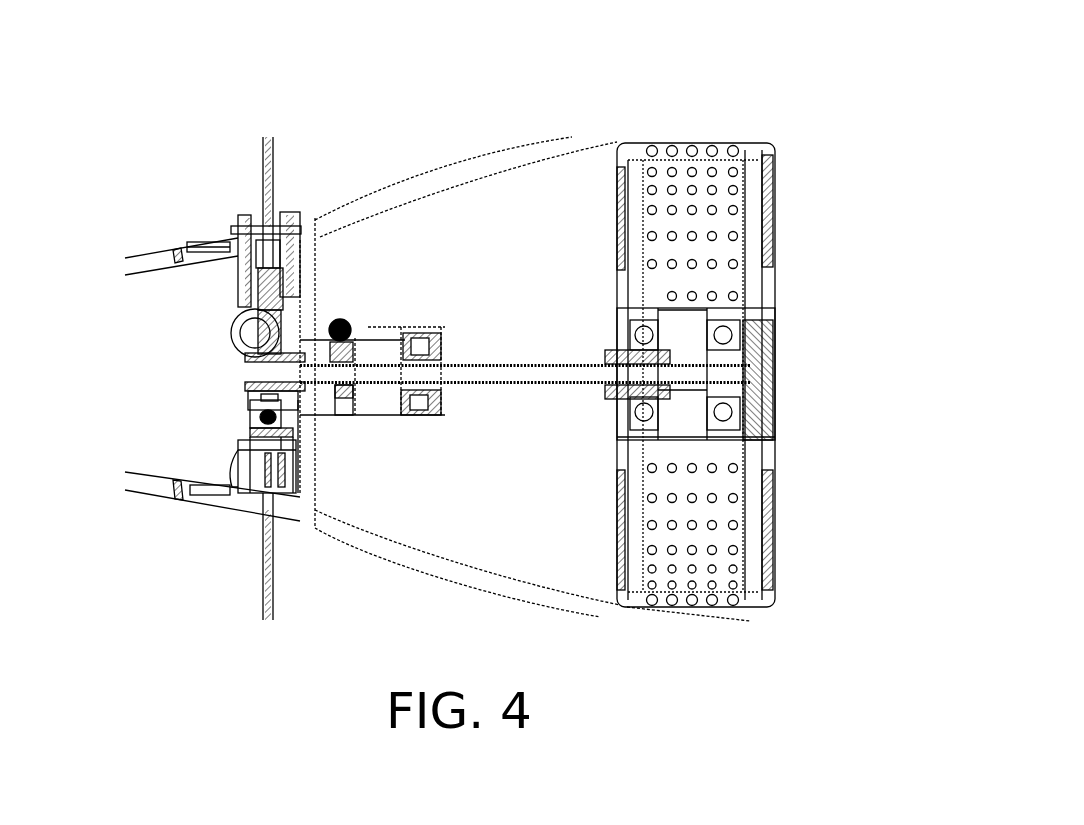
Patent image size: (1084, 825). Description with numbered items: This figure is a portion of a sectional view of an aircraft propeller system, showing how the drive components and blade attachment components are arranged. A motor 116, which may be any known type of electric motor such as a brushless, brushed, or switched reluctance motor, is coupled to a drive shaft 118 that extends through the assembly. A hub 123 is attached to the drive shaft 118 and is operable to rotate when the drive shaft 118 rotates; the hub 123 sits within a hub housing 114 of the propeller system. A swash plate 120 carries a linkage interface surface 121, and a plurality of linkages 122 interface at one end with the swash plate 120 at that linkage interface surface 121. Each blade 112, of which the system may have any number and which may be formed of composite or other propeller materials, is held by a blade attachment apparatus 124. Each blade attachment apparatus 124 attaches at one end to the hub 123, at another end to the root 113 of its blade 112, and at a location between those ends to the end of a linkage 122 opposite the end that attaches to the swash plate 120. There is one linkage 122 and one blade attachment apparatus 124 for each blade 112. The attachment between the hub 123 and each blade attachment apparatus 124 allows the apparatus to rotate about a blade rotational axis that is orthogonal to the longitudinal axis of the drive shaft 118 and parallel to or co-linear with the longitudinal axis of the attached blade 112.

The blade 112 is at (268, 181).
The root 113 is at (268, 236).
The hub housing 114 is at (158, 255).
The motor 116 is at (740, 246).
The drive shaft 118 is at (497, 378).
The swash plate 120 is at (433, 355).
The linkage interface surface 121 is at (428, 385).
The linkage 122 is at (378, 410).
The hub 123 is at (262, 377).
The blade attachment apparatus 124 is at (216, 381).